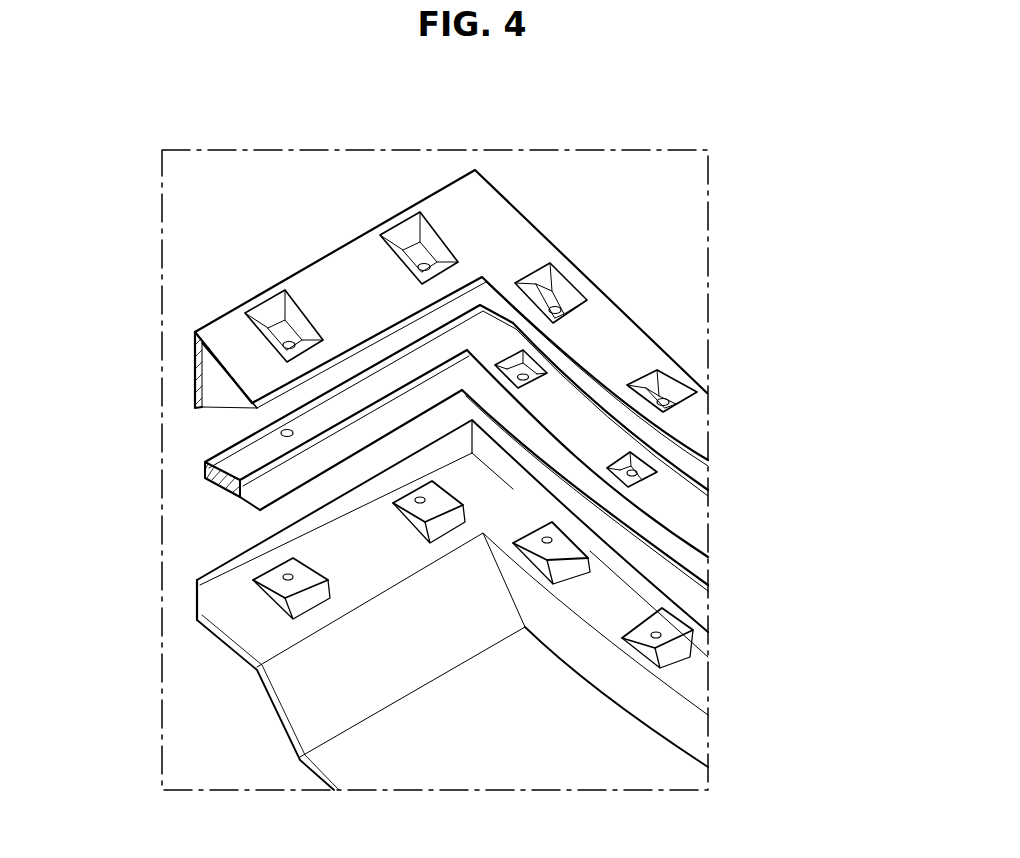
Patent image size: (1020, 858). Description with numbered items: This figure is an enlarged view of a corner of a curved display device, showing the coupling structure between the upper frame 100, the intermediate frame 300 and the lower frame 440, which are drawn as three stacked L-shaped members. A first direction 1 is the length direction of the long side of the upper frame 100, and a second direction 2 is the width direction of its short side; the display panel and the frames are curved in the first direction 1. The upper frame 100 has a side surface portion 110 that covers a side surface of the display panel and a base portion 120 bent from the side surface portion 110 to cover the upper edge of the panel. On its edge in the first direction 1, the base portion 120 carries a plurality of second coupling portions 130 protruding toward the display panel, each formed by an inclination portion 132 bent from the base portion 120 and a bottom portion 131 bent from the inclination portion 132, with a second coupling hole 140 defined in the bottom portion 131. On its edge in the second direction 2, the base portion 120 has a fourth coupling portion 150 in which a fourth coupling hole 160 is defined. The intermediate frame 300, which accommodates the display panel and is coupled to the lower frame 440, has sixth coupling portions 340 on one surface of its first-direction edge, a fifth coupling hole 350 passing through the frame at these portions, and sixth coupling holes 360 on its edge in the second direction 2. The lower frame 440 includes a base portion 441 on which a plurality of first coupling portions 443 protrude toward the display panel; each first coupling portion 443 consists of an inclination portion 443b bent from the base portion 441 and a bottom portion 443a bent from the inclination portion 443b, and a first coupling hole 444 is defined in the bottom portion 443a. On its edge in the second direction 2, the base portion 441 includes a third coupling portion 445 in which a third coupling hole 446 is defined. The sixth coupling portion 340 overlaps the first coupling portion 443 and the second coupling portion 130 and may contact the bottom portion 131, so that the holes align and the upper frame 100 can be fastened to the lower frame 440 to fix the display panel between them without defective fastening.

The first direction 1 is at (593, 167).
The second direction 2 is at (593, 167).
The upper frame 100 is at (458, 277).
The side surface portion 110 is at (212, 385).
The base portion 120 is at (232, 323).
The second coupling portion 130 is at (675, 299).
The bottom portion 131 is at (560, 310).
The inclination portion 132 is at (543, 283).
The second coupling hole 140 is at (690, 384).
The fourth coupling portion 150 is at (290, 343).
The fourth coupling hole 160 is at (237, 340).
The intermediate frame 300 is at (438, 448).
The sixth coupling portion 340 is at (637, 467).
The fifth coupling hole 350 is at (637, 474).
The sixth coupling hole 360 is at (283, 430).
The lower frame 440 is at (481, 605).
The base portion 441 is at (247, 628).
The first coupling portion 443 is at (746, 643).
The bottom portion 443a is at (675, 631).
The inclination portion 443b is at (674, 652).
The first coupling hole 444 is at (657, 631).
The third coupling portion 445 is at (211, 582).
The third coupling hole 446 is at (287, 575).